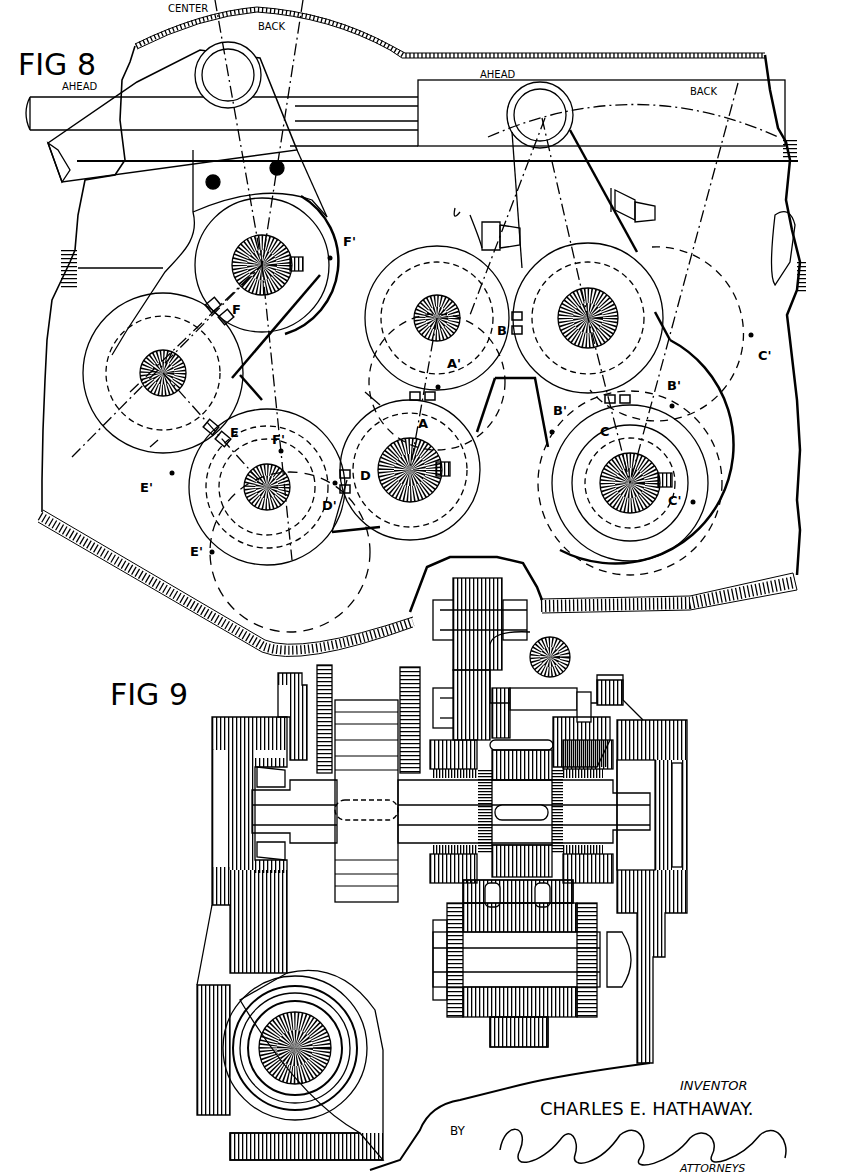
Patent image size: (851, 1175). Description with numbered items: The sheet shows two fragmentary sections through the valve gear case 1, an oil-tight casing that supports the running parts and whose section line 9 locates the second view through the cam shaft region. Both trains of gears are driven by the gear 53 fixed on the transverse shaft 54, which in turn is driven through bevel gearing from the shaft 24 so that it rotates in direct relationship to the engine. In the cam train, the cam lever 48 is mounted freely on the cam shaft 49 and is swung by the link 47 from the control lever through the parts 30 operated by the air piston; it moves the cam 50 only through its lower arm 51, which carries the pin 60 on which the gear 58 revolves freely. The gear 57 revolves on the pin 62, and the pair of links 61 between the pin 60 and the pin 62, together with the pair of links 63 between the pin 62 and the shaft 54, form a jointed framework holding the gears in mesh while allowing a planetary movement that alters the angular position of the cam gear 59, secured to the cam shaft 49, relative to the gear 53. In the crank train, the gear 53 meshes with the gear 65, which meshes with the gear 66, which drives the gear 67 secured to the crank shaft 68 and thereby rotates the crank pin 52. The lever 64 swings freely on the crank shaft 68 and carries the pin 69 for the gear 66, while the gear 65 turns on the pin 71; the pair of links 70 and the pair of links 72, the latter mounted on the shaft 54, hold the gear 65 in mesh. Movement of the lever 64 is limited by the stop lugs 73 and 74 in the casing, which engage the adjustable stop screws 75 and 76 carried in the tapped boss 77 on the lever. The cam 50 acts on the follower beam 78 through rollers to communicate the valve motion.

In FIG. 8, the valve gear case 1 is at (715, 603).
In FIG. 9, the valve gear case 1 is at (232, 1148).
In FIG. 8, the section line 9— 9 is at (206, 44).
In FIG. 9, the shaft 24 is at (318, 1032).
In FIG. 8, the parts operated by the air piston 30 is at (380, 97).
In FIG. 9, the parts operated by the air piston 30 is at (505, 594).
In FIG. 8, the link 47 is at (70, 172).
In FIG. 8, the cam lever 48 is at (272, 119).
In FIG. 9, the cam lever 48 is at (522, 690).
In FIG. 8, the cam shaft 49 is at (282, 280).
In FIG. 9, the cam shaft 49 is at (645, 808).
In FIG. 9, the cam 50 is at (362, 708).
In FIG. 8, the lower arm 51 is at (248, 352).
In FIG. 9, the lower arm 51 is at (465, 889).
In FIG. 8, the crank pin 52 is at (698, 406).
In FIG. 8, the gear 53 is at (466, 515).
In FIG. 8, the transverse shaft 54 is at (430, 490).
In FIG. 8, the gear 57 is at (356, 596).
In FIG. 8, the gear 58 is at (152, 447).
In FIG. 9, the gear 58 is at (558, 1045).
In FIG. 8, the cam gear 59 is at (328, 240).
In FIG. 9, the cam gear 59 is at (525, 745).
In FIG. 8, the pin 60 is at (176, 373).
In FIG. 9, the pin 60 is at (436, 970).
In FIG. 8, the pair of links 61 is at (250, 388).
In FIG. 9, the pair of links 61 is at (446, 908).
In FIG. 8, the pin 62 is at (280, 497).
In FIG. 8, the pair of links 63 is at (356, 517).
In FIG. 8, the lever 64 is at (577, 133).
In FIG. 9, the lever 64 is at (486, 590).
In FIG. 8, the gear 65 is at (500, 432).
In FIG. 8, the gear 66 is at (690, 252).
In FIG. 8, the gear 67 is at (708, 476).
In FIG. 8, the crank shaft 68 is at (600, 483).
In FIG. 8, the pin 69 is at (600, 340).
In FIG. 8, the pair of links 70 is at (505, 370).
In FIG. 8, the pin 71 is at (424, 305).
In FIG. 8, the pair of links 72 is at (366, 394).
In FIG. 8, the stop lug 73 is at (785, 238).
In FIG. 8, the stop lug 74 is at (467, 215).
In FIG. 8, the stop screw 75 is at (655, 200).
In FIG. 8, the stop screw 76 is at (488, 222).
In FIG. 8, the tapped boss 77 is at (614, 190).
In FIG. 9, the follower beam 78 is at (400, 672).